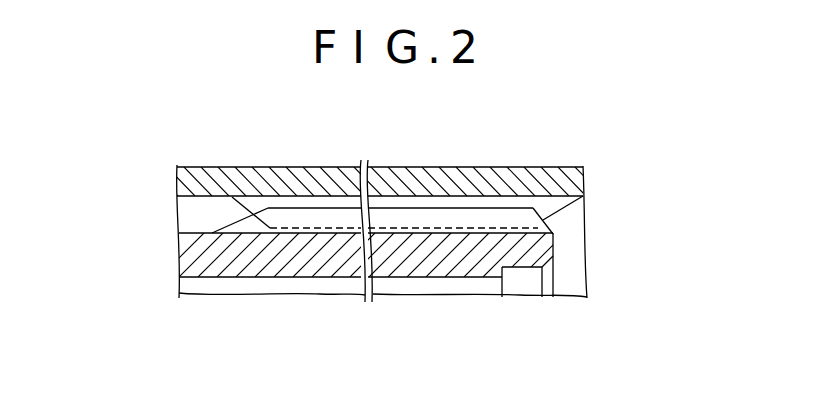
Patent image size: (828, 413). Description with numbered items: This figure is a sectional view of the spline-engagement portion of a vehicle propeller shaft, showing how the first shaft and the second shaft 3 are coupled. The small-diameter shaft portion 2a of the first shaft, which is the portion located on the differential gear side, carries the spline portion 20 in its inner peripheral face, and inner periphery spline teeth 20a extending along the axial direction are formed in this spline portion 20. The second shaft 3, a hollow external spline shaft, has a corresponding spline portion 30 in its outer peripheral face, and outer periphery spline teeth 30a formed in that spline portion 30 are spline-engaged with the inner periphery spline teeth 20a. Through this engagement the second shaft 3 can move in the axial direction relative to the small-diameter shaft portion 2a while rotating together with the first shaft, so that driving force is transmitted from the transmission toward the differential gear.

The small-diameter shaft portion 2a is at (471, 156).
The spline portion 20 is at (404, 176).
The inner periphery spline teeth 20a is at (549, 170).
The spline portion 30 is at (442, 265).
The outer periphery spline teeth 30a is at (328, 217).
The second shaft 3 is at (256, 302).